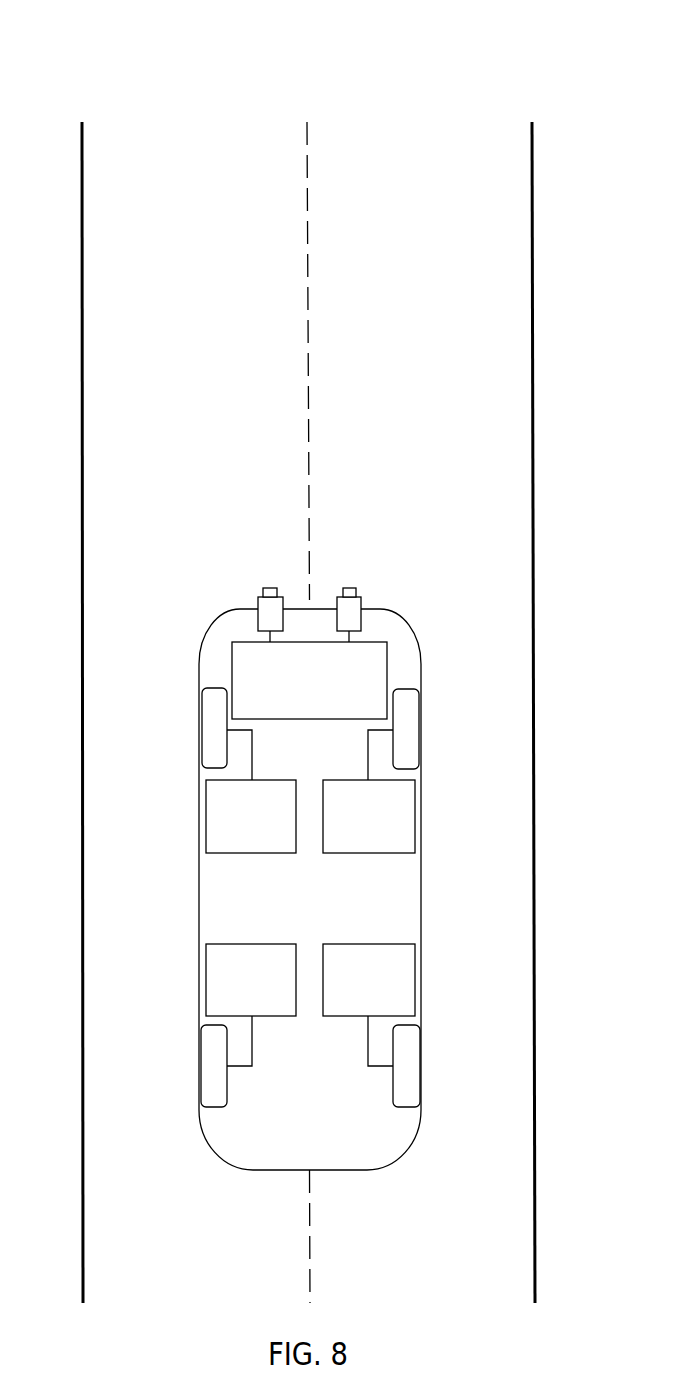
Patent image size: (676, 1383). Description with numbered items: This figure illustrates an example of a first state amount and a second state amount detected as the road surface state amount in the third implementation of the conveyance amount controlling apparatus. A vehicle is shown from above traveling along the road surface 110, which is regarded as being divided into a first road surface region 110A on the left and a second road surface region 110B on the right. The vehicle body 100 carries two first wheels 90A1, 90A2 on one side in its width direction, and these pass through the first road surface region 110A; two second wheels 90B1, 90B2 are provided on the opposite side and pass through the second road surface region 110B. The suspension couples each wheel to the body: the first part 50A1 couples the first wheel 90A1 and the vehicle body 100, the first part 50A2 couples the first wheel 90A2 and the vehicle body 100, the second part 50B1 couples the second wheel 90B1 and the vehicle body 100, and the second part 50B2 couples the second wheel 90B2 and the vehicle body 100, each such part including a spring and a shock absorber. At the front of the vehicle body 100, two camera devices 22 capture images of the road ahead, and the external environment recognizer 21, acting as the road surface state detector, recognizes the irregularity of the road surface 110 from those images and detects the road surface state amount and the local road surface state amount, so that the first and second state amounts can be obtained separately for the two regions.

The road surface 110 is at (463, 41).
The first road surface region 110A is at (196, 120).
The second road surface region 110B is at (421, 120).
The vehicle body 100 is at (421, 898).
The camera device 22 is at (258, 624).
The external environment recognizer 21 is at (387, 680).
The first wheel 90A1 is at (199, 728).
The second wheel 90B1 is at (421, 728).
The first wheel 90A2 is at (201, 1065).
The second wheel 90B2 is at (421, 1065).
The first part 50A1 is at (206, 817).
The second part 50B1 is at (415, 818).
The first part 50A2 is at (206, 980).
The second part 50B2 is at (415, 981).